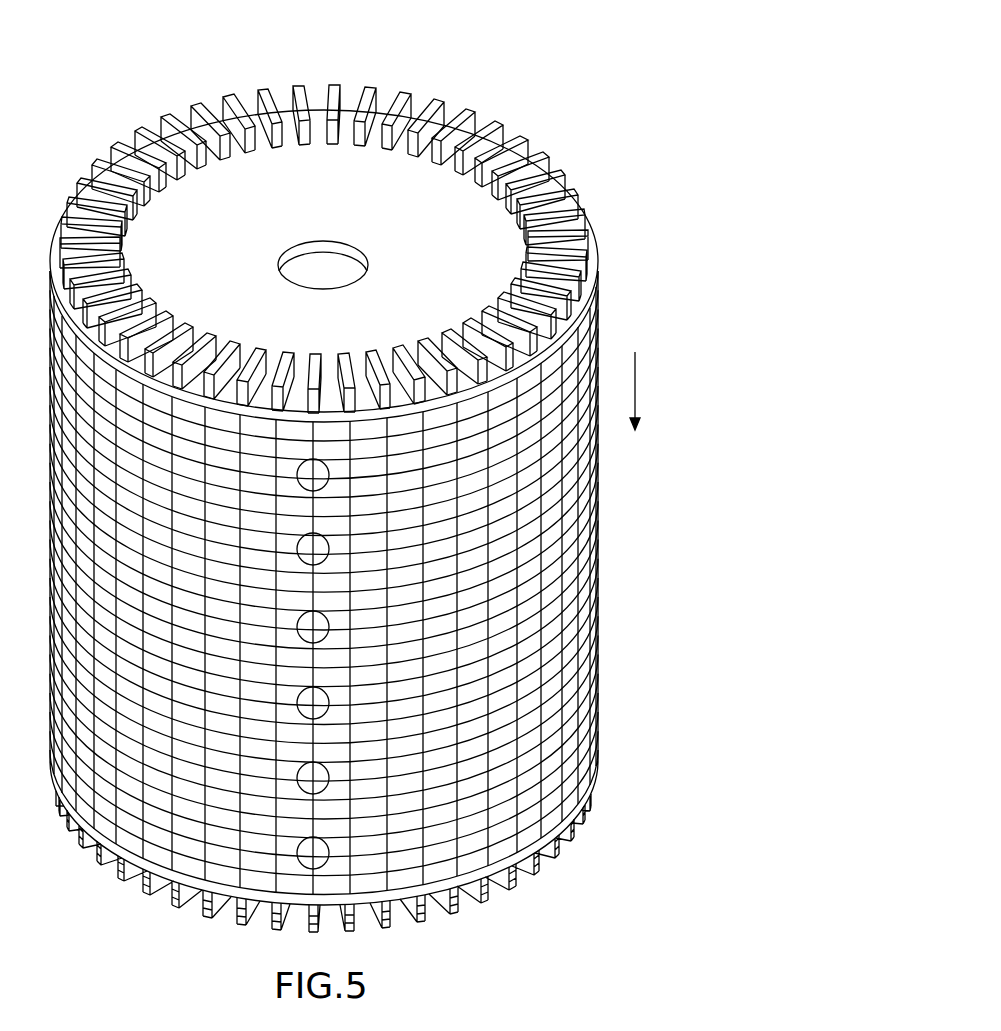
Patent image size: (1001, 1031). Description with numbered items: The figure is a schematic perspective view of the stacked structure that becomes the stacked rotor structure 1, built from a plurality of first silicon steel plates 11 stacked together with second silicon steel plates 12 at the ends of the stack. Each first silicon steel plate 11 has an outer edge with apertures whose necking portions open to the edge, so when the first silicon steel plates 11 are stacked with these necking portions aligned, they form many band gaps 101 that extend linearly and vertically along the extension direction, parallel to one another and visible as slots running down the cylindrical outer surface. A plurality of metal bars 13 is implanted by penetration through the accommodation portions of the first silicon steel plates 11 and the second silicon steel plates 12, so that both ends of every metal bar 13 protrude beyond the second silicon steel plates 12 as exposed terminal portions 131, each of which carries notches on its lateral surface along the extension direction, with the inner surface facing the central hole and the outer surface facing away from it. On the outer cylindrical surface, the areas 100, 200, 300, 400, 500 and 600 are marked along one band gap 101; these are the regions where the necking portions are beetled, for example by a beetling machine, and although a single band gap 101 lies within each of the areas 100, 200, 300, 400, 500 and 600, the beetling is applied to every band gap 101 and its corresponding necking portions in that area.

The stacked rotor structure 1 is at (625, 93).
The first silicon steel plate 11 is at (598, 668).
The second silicon steel plate 12 is at (598, 289).
The metal bar 13 is at (548, 136).
The exposed terminal portion 131 is at (548, 152).
The area 100 is at (329, 471).
The band gap 101 is at (324, 507).
The area 200 is at (329, 545).
The area 300 is at (329, 623).
The area 400 is at (329, 699).
The area 500 is at (329, 774).
The area 600 is at (329, 849).